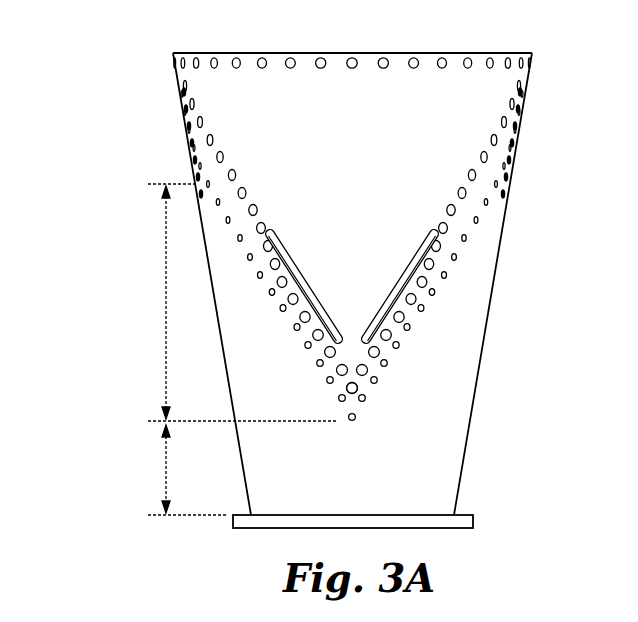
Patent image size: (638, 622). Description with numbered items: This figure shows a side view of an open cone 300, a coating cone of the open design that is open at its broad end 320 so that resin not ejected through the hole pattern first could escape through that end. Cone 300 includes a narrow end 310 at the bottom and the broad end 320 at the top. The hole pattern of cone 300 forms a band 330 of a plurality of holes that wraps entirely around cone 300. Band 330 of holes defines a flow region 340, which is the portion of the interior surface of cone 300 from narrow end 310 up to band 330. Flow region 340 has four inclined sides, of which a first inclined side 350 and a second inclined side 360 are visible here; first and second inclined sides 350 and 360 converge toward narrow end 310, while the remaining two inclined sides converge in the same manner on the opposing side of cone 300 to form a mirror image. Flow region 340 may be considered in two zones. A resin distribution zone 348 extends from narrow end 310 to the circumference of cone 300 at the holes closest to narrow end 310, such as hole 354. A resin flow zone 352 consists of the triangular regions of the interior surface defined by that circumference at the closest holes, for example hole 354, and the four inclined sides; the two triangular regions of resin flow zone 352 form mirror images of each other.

The open cone 300 is at (322, 290).
The narrow end 310 is at (436, 518).
The broad end 320 is at (430, 53).
The band 330 is at (514, 145).
The flow region 340 is at (352, 484).
The first inclined side 350 is at (277, 299).
The second inclined side 360 is at (428, 302).
The hole 354 is at (357, 416).
The resin flow zone 352 is at (164, 325).
The resin distribution zone 348 is at (164, 473).